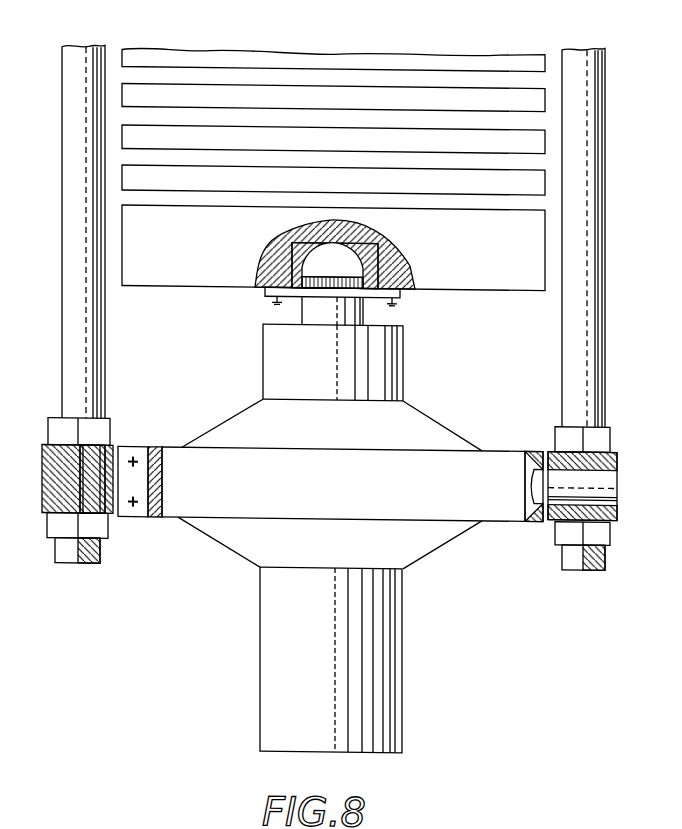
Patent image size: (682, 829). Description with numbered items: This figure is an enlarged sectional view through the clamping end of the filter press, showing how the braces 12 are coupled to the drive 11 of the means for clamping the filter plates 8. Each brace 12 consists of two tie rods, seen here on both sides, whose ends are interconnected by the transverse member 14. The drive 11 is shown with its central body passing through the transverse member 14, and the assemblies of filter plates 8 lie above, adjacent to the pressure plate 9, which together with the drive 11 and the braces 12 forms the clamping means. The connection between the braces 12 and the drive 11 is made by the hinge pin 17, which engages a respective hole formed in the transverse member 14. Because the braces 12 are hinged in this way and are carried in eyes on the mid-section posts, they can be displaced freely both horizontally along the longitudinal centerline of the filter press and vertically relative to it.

The filter plates 8 is at (420, 92).
The pressure plate 9 is at (473, 272).
The drive 11 is at (270, 632).
The brace 12 is at (72, 86).
The transverse member 14 is at (607, 455).
The hinge pin 17 is at (597, 476).